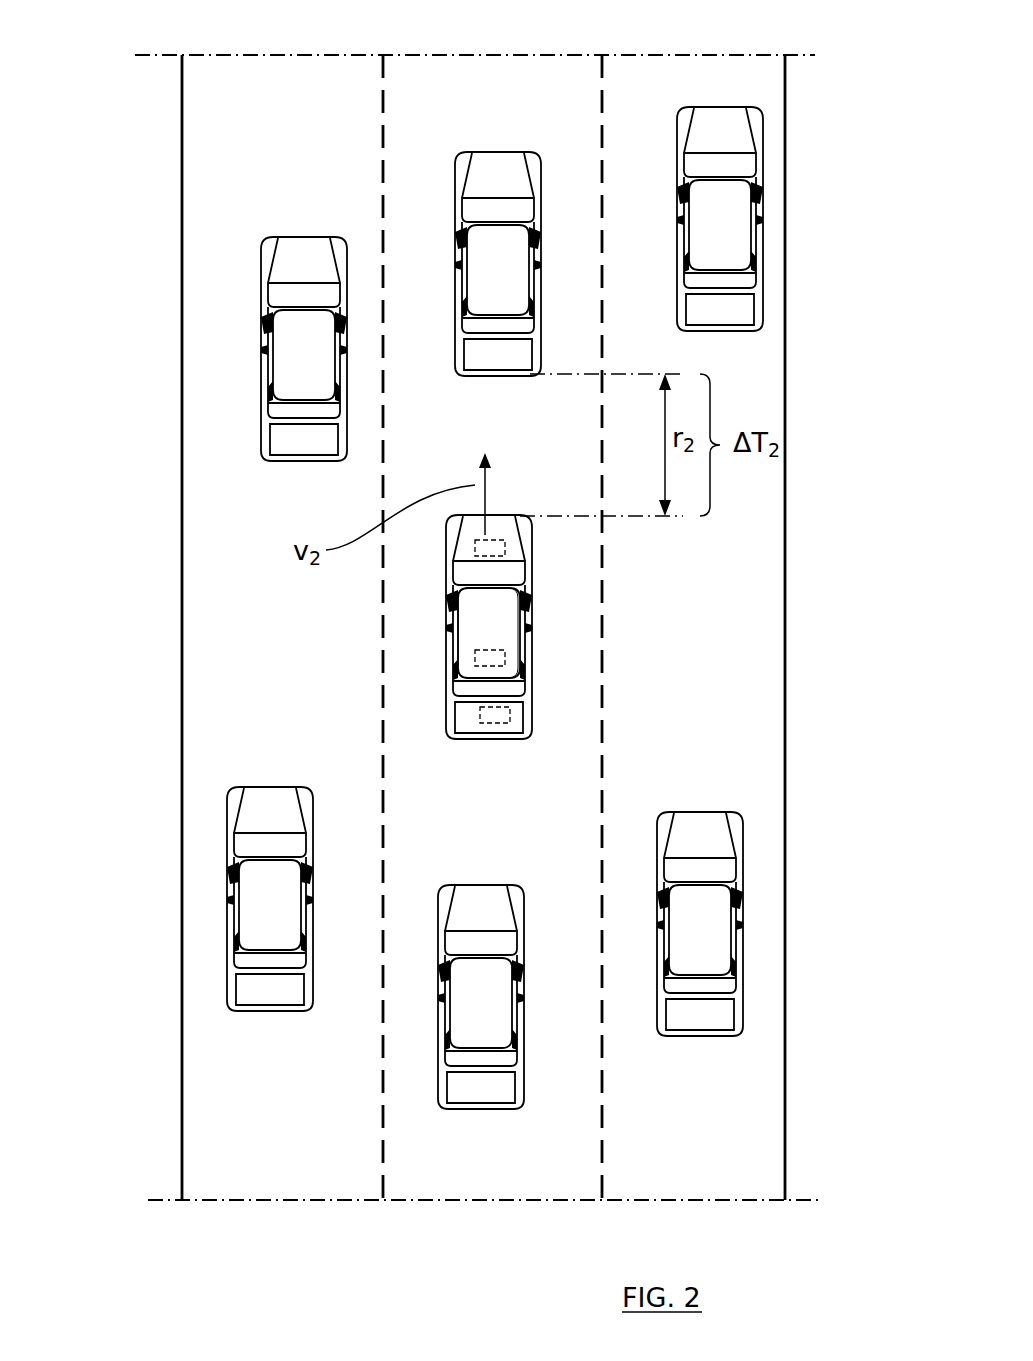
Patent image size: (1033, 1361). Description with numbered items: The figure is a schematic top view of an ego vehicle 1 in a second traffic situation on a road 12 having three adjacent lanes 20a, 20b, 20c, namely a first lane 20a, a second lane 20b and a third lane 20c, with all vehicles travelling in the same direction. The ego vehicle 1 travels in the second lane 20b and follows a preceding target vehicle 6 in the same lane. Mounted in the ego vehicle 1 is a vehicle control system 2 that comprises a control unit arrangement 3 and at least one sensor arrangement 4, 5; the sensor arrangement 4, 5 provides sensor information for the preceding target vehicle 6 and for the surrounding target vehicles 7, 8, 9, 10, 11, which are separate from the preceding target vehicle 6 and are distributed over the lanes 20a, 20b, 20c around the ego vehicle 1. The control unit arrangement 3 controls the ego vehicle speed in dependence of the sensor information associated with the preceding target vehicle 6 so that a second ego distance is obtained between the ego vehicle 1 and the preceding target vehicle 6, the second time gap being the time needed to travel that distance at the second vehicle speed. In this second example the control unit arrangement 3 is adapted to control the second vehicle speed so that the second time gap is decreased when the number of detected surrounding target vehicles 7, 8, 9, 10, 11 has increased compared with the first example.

The ego vehicle 1 is at (493, 624).
The vehicle control system 2 is at (570, 627).
The control unit arrangement 3 is at (510, 713).
The sensor arrangement 4 is at (505, 545).
The sensor arrangement 5 is at (505, 655).
The preceding target vehicle 6 is at (497, 165).
The surrounding target vehicle 7 is at (306, 336).
The surrounding target vehicle 8 is at (483, 1002).
The surrounding target vehicle 9 is at (690, 943).
The surrounding target vehicle 10 is at (272, 884).
The surrounding target vehicle 11 is at (730, 137).
The road 12 is at (458, 654).
The first lane 20a is at (510, 1156).
The second lane 20b is at (305, 1156).
The third lane 20c is at (703, 1150).